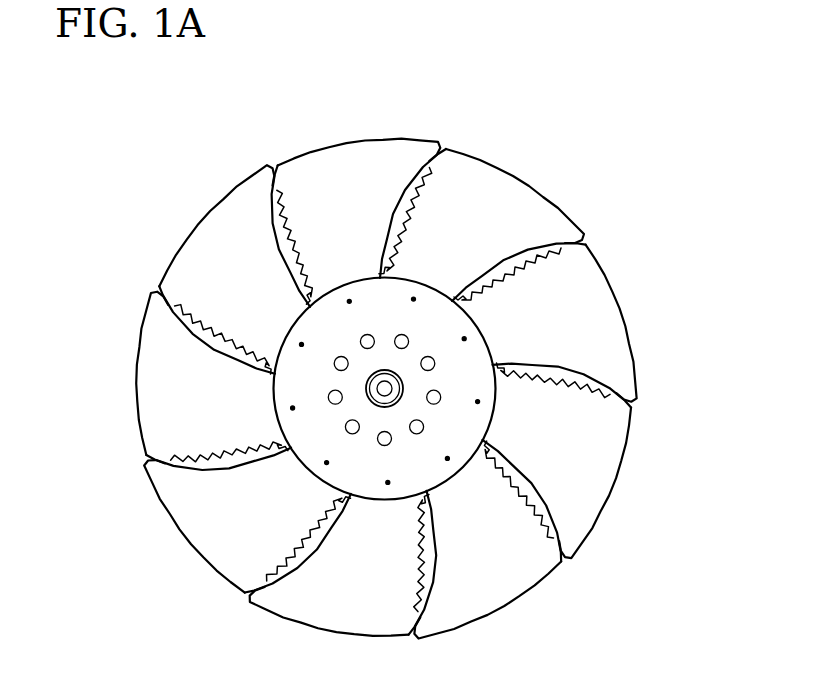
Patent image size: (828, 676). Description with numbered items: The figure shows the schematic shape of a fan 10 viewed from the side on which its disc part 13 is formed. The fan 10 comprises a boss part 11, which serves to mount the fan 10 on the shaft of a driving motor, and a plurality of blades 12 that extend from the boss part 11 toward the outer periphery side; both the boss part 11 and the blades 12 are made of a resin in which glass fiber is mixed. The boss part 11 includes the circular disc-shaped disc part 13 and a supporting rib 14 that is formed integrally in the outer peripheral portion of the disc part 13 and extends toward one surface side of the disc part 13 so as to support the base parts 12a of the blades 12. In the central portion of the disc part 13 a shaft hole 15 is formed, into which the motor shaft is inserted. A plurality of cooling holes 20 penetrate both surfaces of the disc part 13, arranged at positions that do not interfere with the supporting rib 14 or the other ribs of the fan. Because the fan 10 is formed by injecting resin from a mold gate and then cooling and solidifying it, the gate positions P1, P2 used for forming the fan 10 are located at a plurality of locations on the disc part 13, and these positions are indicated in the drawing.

The fan 10 is at (516, 106).
The boss part 11 is at (463, 338).
The blade 12 is at (466, 175).
The base part of blade 12a is at (432, 287).
The disc part 13 is at (450, 460).
The supporting rib 14 is at (487, 430).
The shaft hole 15 is at (385, 370).
The cooling hole 20 is at (377, 441).
The gate position P1 is at (302, 347).
The gate position P2 is at (348, 303).